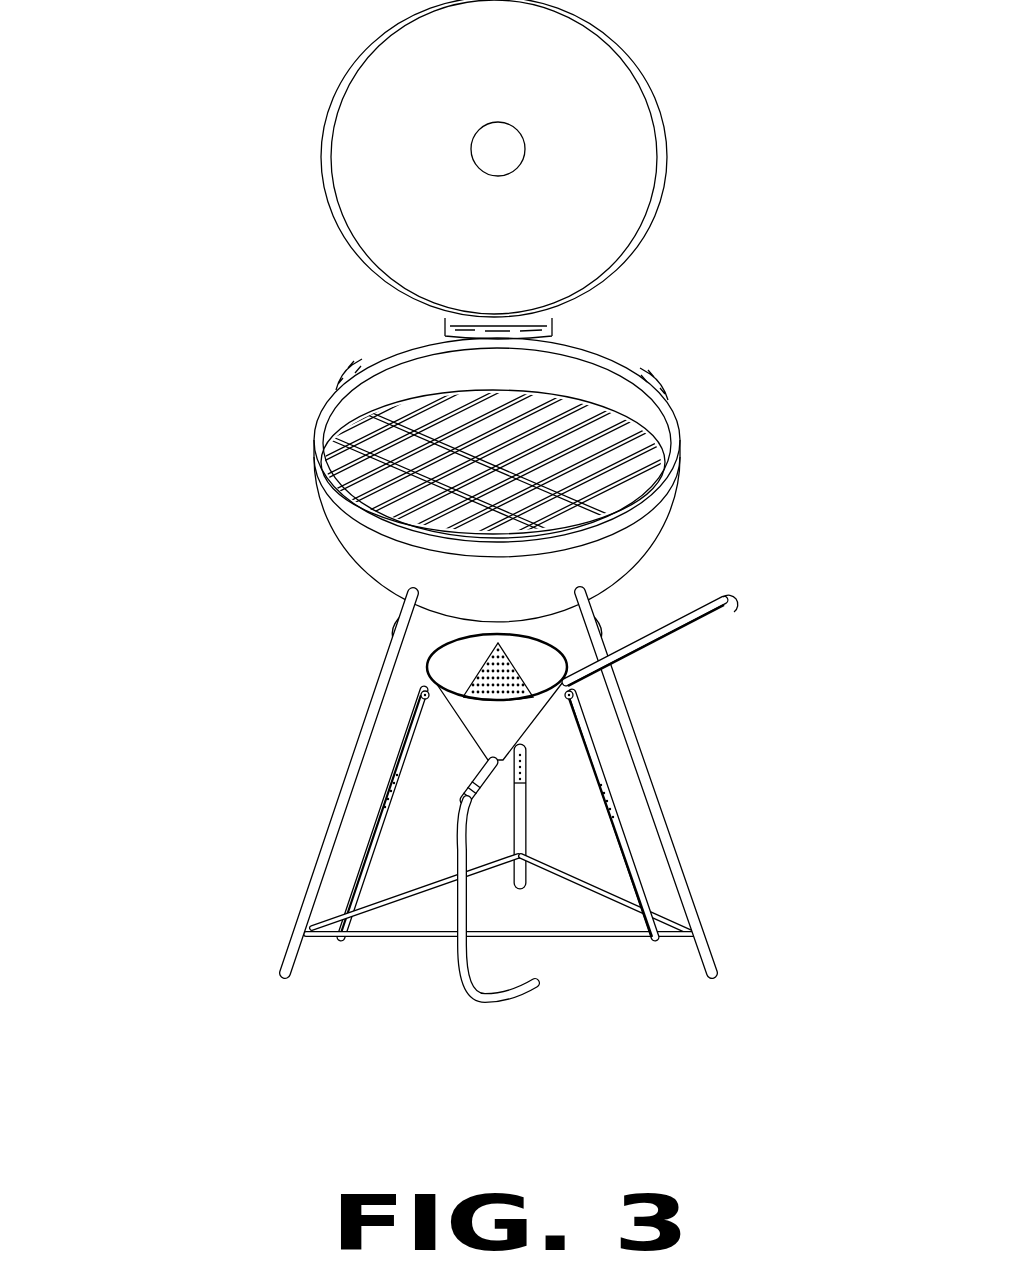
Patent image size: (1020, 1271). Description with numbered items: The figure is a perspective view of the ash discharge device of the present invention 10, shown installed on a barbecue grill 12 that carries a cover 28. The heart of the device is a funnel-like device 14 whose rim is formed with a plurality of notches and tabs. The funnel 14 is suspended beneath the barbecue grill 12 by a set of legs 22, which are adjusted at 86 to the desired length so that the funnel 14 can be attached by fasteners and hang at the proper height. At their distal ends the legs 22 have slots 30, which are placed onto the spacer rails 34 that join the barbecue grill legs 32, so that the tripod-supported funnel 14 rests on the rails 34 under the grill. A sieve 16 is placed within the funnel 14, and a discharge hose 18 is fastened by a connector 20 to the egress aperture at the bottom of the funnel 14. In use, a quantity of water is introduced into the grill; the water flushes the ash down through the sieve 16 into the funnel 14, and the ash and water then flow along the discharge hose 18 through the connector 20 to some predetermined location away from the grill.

The present invention 10 is at (416, 385).
The barbecue grill 12 is at (590, 432).
The funnel-like device 14 is at (517, 725).
The sieve 16 is at (543, 640).
The discharge hose 18 is at (463, 1003).
The connector 20 is at (453, 799).
The legs 22 is at (378, 909).
The cover 28 is at (352, 168).
The slots 30 is at (677, 968).
The barbecue grill legs 32 is at (377, 703).
The spacer rails 34 is at (590, 940).
The adjustment 86 is at (612, 795).